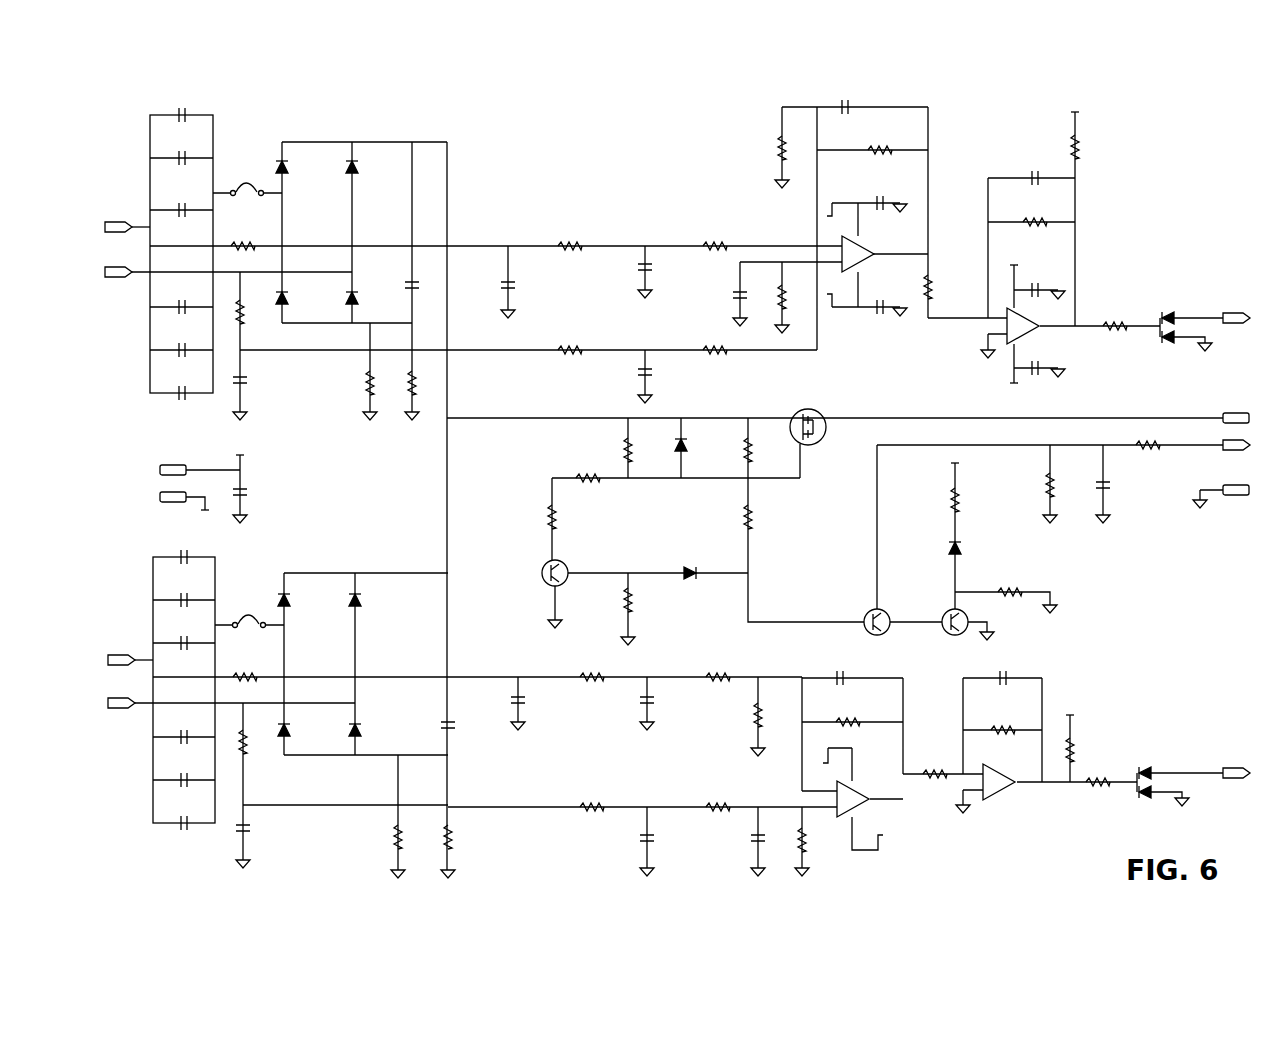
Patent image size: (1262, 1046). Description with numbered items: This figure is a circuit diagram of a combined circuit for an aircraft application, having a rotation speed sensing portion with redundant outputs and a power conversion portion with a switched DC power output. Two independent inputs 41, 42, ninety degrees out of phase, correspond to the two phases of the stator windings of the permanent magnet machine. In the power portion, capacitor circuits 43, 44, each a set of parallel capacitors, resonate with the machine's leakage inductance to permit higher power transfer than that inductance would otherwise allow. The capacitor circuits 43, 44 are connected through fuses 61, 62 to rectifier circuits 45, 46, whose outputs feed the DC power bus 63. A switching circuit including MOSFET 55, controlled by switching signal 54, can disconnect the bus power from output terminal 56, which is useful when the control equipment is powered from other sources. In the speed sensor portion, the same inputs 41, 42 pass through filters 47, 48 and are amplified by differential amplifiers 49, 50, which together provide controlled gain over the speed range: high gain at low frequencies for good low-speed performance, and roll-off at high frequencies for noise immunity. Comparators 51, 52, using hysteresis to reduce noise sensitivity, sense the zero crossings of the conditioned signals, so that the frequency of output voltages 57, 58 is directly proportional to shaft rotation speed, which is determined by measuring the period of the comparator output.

The independent input 41 is at (122, 212).
The independent input 42 is at (130, 643).
The capacitor circuit 43 is at (232, 116).
The capacitor circuit 44 is at (147, 826).
The rectifier circuit 45 is at (350, 126).
The rectifier circuit 46 is at (305, 562).
The filter 47 is at (612, 224).
The filter 48 is at (685, 828).
The differential amplifier 49 is at (1044, 239).
The differential amplifier 50 is at (907, 825).
The comparator 51 is at (1038, 338).
The comparator 52 is at (1005, 792).
The switching signal 54 is at (1228, 452).
The MOSFET 55 is at (834, 402).
The output terminal 56 is at (1226, 413).
The output voltage 57 is at (1237, 312).
The output voltage 58 is at (1240, 768).
The fuse 61 is at (245, 187).
The fuse 62 is at (248, 620).
The DC power bus 63 is at (552, 416).